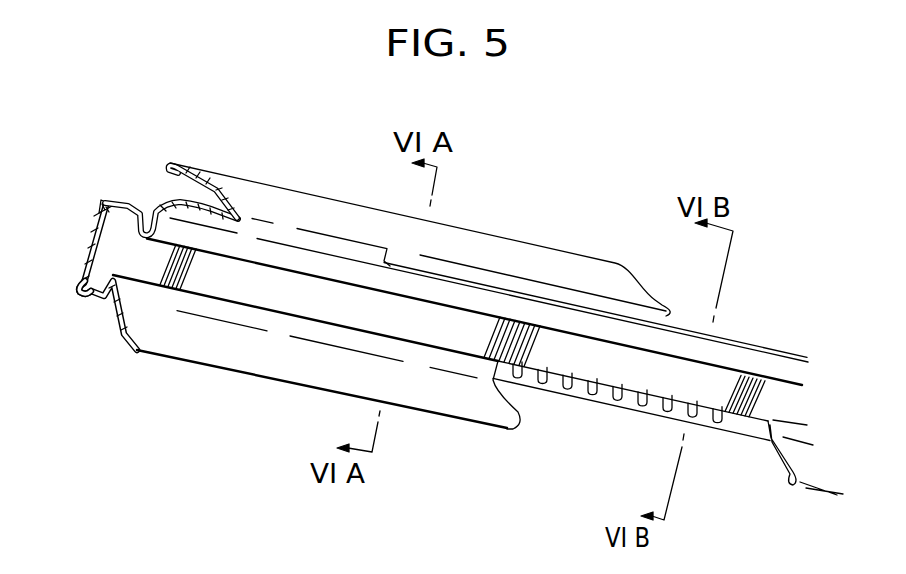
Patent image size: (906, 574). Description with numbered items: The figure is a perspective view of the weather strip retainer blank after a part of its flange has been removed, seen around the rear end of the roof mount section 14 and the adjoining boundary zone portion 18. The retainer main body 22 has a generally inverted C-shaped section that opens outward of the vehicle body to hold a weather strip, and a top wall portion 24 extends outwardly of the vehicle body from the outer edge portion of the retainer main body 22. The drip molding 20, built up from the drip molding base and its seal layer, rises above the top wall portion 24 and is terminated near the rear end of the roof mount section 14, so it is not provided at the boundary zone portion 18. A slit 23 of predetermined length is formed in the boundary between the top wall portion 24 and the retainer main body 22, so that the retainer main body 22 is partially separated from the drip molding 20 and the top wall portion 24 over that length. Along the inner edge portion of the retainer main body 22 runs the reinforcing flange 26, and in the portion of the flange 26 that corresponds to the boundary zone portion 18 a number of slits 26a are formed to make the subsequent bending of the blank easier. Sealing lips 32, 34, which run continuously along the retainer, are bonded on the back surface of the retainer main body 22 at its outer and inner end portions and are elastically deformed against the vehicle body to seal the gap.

The roof mount section 14 is at (510, 197).
The boundary zone portion 18 is at (565, 414).
The drip molding 20 is at (260, 196).
The retainer main body 22 is at (97, 248).
The slit 23 is at (443, 276).
The top wall portion 24 is at (172, 203).
The flange 26 is at (227, 348).
The slits 26a is at (637, 412).
The sealing lip 32 is at (107, 199).
The sealing lip 34 is at (77, 280).